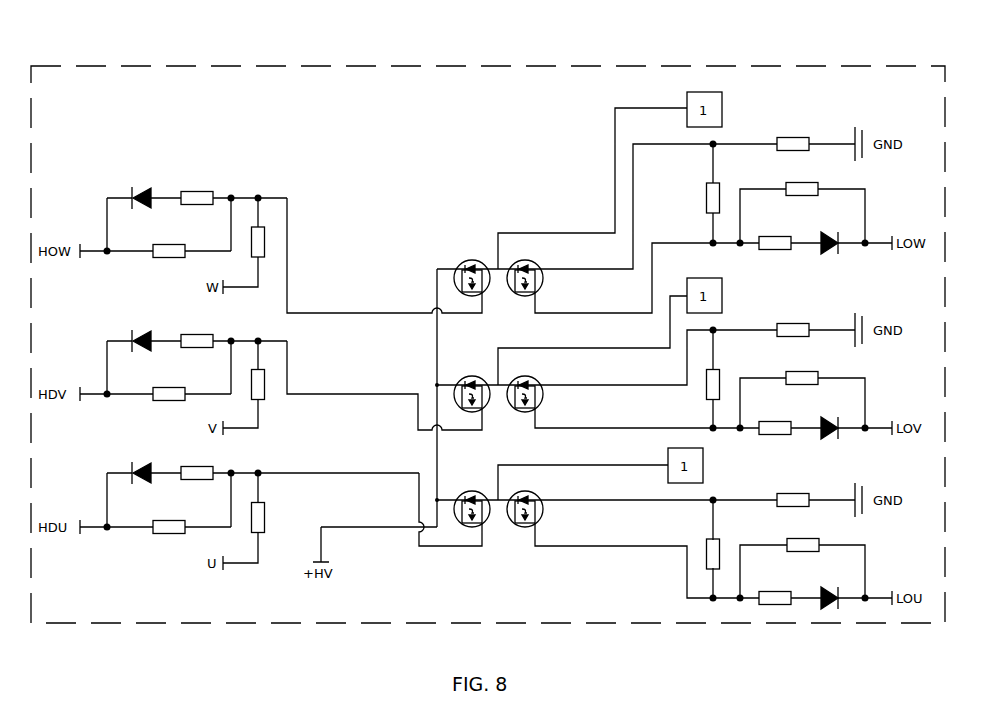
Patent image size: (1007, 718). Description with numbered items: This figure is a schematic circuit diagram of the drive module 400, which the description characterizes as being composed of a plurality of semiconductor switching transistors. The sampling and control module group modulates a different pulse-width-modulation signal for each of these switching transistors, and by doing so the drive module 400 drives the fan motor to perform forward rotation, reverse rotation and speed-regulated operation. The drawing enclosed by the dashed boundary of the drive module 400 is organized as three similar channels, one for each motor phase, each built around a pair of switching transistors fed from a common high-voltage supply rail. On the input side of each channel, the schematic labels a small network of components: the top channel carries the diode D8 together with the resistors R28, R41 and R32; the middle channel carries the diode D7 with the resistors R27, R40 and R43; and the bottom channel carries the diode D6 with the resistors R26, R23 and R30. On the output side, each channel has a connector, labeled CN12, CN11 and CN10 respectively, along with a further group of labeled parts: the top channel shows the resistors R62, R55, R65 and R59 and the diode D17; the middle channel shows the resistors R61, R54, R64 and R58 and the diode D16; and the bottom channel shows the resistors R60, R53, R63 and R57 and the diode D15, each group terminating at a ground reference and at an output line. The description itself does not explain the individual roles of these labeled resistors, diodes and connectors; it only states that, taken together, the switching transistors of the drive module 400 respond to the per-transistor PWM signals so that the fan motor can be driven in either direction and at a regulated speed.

The drive module 400 is at (440, 93).
The diode D8 is at (139, 190).
The diode D7 is at (139, 333).
The diode D6 is at (139, 465).
The diode D17 is at (831, 232).
The diode D16 is at (831, 418).
The diode D15 is at (831, 588).
The resistor R28 is at (195, 191).
The resistor R41 is at (153, 246).
The resistor R32 is at (270, 233).
The resistor R27 is at (195, 334).
The resistor R40 is at (183, 389).
The resistor R43 is at (270, 376).
The resistor R26 is at (195, 466).
The resistor R23 is at (168, 519).
The resistor R30 is at (273, 518).
The resistor R62 is at (793, 137).
The resistor R55 is at (725, 189).
The resistor R65 is at (800, 181).
The resistor R59 is at (774, 235).
The resistor R61 is at (793, 323).
The resistor R54 is at (725, 376).
The resistor R64 is at (786, 370).
The resistor R58 is at (774, 420).
The resistor R60 is at (793, 493).
The resistor R53 is at (725, 546).
The resistor R63 is at (785, 540).
The resistor R57 is at (774, 590).
The connector CN12 is at (704, 101).
The connector CN11 is at (704, 287).
The connector CN10 is at (685, 457).